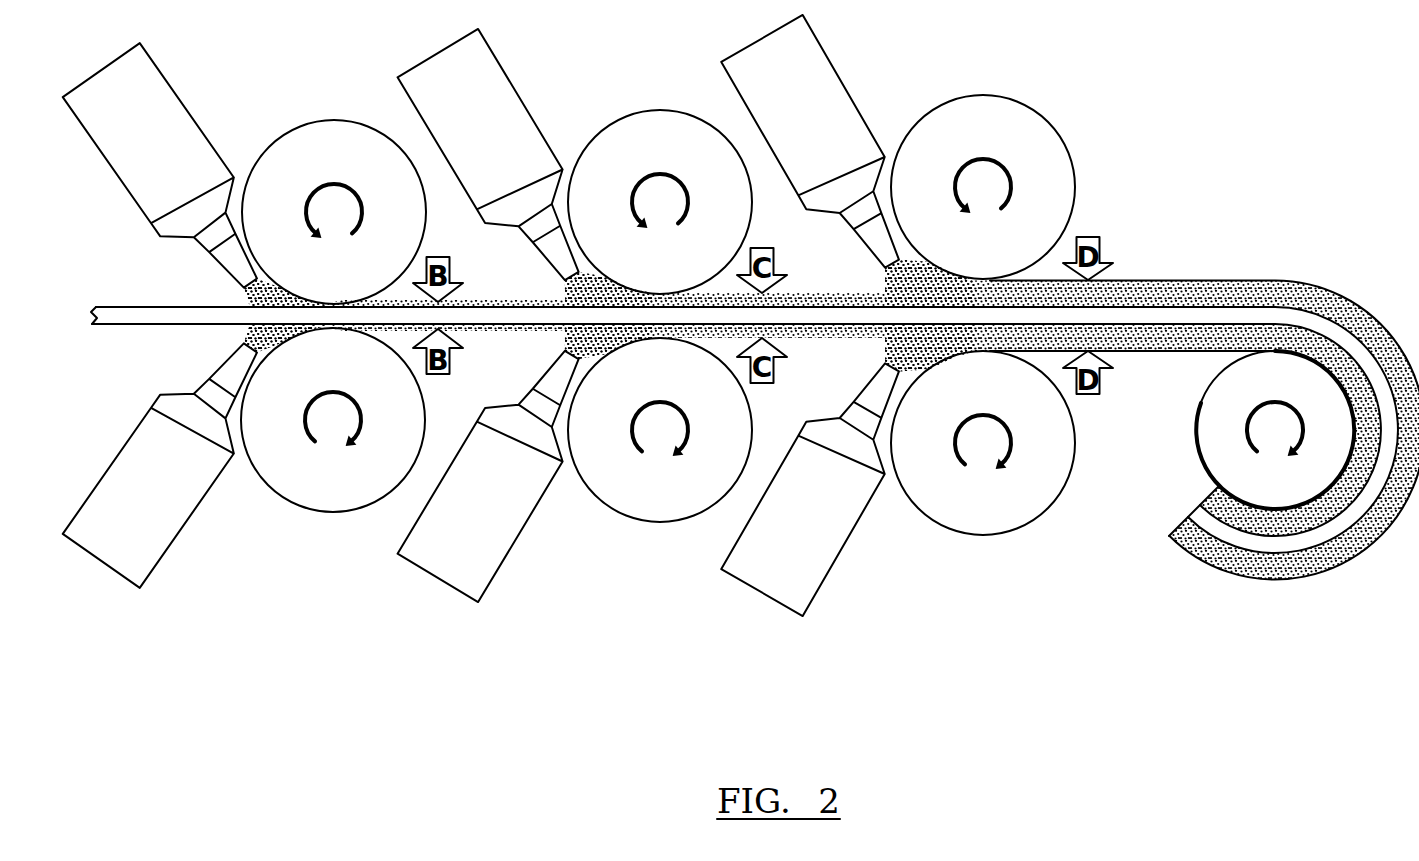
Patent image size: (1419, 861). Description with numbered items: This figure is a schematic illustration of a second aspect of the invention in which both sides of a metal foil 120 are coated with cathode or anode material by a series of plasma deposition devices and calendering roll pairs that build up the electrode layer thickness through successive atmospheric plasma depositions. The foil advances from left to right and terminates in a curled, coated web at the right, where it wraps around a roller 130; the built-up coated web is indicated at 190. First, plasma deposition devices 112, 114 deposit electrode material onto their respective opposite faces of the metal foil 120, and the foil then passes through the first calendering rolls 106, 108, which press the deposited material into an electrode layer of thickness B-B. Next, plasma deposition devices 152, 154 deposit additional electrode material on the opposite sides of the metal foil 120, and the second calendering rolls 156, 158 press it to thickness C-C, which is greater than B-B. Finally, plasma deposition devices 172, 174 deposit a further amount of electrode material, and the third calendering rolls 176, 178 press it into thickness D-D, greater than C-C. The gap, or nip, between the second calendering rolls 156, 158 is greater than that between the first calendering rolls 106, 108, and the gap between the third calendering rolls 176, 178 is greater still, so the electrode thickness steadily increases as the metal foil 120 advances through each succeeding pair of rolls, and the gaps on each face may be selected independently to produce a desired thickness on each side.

The first calendering roll 106 is at (332, 513).
The first calendering roll 108 is at (333, 119).
The plasma deposition device 112 is at (183, 104).
The plasma deposition device 114 is at (184, 524).
The metal foil 120 is at (135, 316).
The take-up roller 130 is at (1198, 452).
The plasma deposition device 152 is at (525, 107).
The plasma deposition device 154 is at (527, 527).
The second calendering roll 156 is at (662, 523).
The second calendering roll 158 is at (662, 110).
The plasma deposition device 172 is at (854, 100).
The plasma deposition device 174 is at (857, 526).
The third calendering roll 176 is at (995, 536).
The third calendering roll 178 is at (992, 96).
The coated web 190 is at (1288, 584).